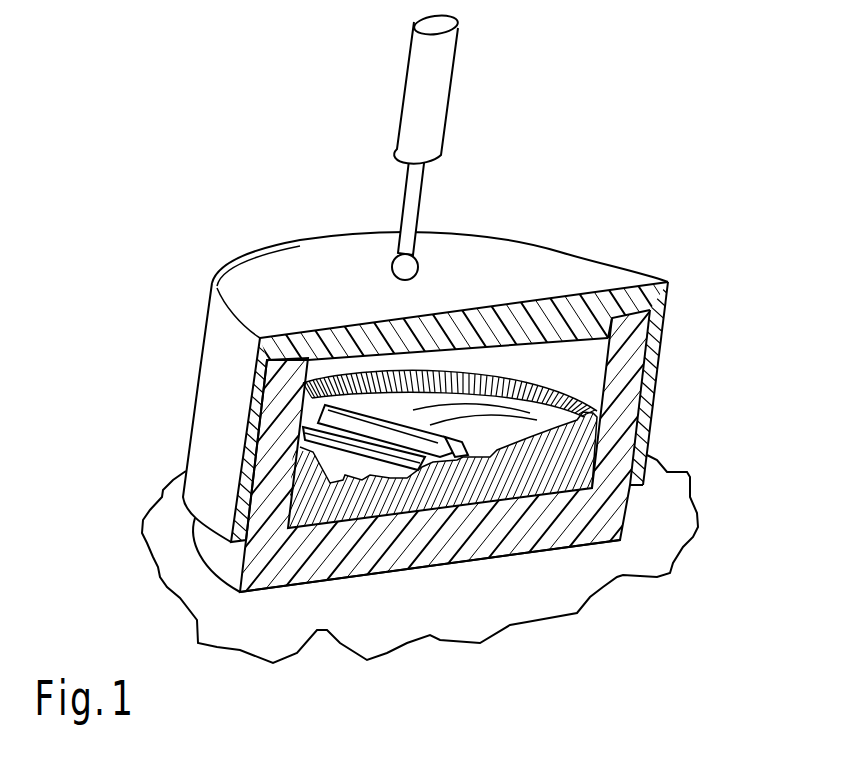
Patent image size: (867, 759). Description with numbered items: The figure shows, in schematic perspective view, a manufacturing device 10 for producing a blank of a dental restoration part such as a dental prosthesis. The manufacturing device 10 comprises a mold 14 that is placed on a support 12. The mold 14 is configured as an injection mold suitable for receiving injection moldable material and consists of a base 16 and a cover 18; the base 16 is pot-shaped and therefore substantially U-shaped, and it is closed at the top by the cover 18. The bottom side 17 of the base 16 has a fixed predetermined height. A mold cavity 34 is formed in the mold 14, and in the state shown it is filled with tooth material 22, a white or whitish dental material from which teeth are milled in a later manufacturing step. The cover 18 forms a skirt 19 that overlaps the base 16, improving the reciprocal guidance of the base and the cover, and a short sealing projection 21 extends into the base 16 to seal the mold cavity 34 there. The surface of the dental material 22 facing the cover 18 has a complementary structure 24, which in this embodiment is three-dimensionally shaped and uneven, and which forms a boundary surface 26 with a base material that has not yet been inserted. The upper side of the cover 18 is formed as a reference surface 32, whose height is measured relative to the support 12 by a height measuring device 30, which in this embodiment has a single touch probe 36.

The manufacturing device 10 is at (620, 217).
The support 12 is at (666, 533).
The mold 14 is at (698, 413).
The base 16 is at (370, 556).
The bottom side 17 is at (512, 535).
The cover 18 is at (615, 273).
The skirt 19 is at (642, 431).
The sealing projection 21 is at (537, 343).
The tooth material 22 is at (453, 490).
The complementary structure 24 is at (548, 389).
The boundary surface 26 is at (373, 432).
The height measuring device 30 is at (440, 173).
The reference surface 32 is at (512, 273).
The mold cavity 34 is at (572, 356).
The touch probe 36 is at (440, 65).